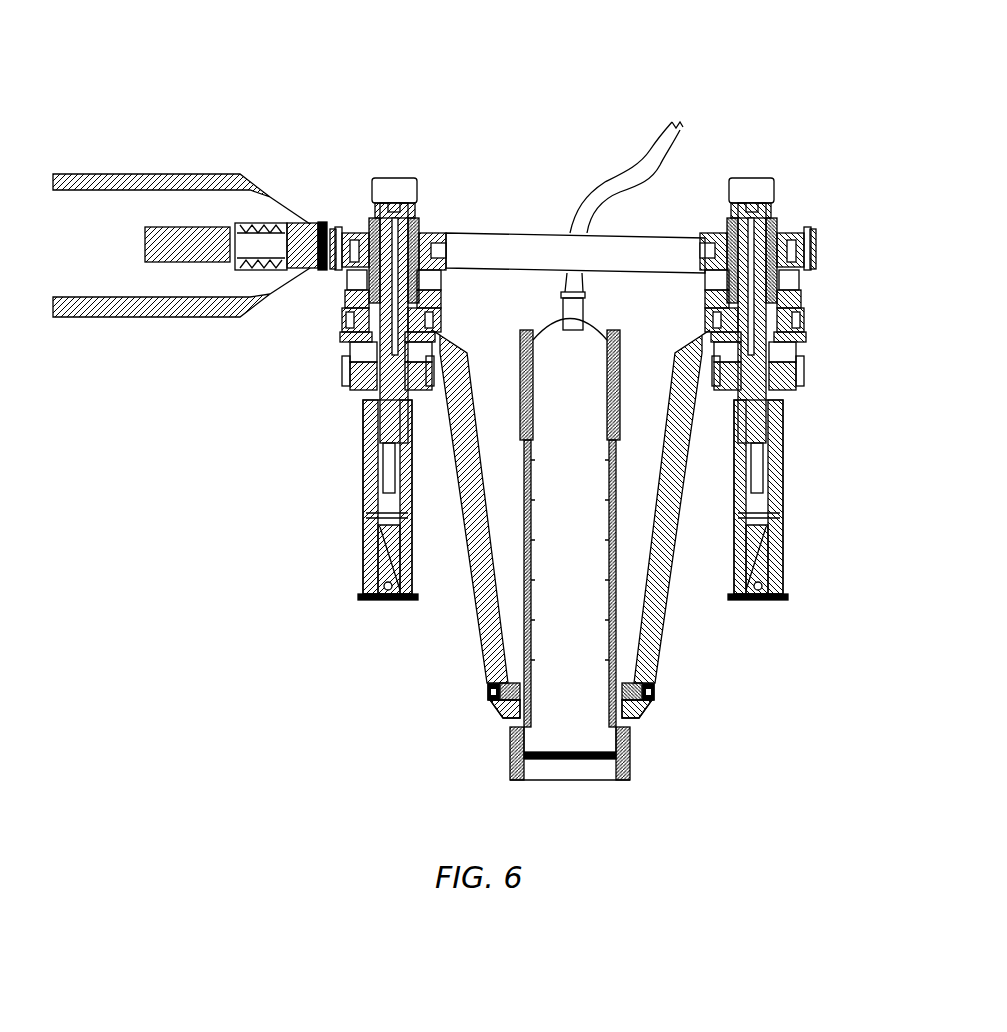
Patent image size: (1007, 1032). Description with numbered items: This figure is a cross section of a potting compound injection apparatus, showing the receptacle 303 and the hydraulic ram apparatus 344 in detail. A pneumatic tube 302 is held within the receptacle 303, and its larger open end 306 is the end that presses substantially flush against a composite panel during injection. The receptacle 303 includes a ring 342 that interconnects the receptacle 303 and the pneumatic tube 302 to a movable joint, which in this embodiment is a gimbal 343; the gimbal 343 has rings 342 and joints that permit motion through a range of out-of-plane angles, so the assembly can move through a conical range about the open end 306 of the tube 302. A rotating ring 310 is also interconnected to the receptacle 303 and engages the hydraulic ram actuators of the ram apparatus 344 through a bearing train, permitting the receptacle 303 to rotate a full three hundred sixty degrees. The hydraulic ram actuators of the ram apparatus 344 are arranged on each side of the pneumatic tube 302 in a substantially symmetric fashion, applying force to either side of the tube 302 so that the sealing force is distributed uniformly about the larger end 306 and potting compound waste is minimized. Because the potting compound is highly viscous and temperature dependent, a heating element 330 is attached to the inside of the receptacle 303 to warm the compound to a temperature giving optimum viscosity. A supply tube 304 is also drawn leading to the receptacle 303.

The pneumatic tube 302 is at (580, 522).
The receptacle 303 is at (657, 612).
The supply tube 304 is at (605, 182).
The open end 306 is at (597, 781).
The rotating ring 310 is at (470, 233).
The heating element 330 is at (523, 600).
The ring 342 is at (652, 662).
The gimbal 343 is at (485, 695).
The hydraulic ram apparatus 344 is at (400, 162).